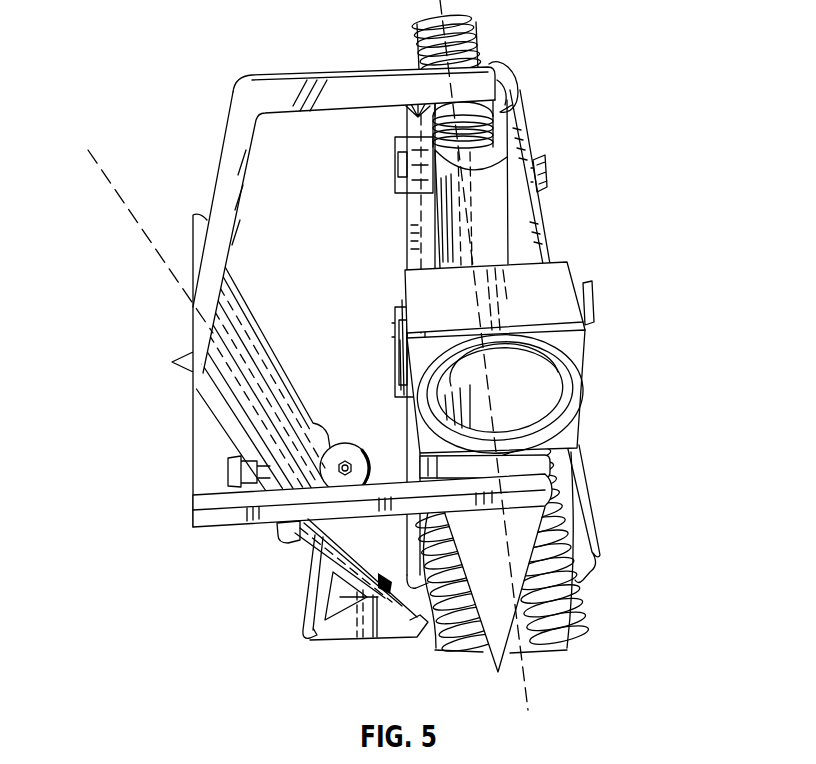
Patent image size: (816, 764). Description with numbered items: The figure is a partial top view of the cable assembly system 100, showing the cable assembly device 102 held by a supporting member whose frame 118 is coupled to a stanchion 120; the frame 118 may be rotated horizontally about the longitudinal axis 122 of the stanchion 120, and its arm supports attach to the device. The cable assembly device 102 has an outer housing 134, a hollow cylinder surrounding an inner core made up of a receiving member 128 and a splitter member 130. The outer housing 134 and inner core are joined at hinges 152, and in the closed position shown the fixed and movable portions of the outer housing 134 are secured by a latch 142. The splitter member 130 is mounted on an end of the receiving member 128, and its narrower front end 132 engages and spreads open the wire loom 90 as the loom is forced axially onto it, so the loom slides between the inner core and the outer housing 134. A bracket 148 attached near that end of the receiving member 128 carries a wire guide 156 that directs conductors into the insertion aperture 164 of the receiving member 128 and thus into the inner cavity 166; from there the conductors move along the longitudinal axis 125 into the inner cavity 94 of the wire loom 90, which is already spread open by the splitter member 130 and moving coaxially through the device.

The cable assembly system 100 is at (116, 28).
The cable assembly device 102 is at (653, 198).
The wire loom 90 is at (474, 40).
The inner cavity 94 is at (510, 92).
The frame 118 is at (267, 72).
The stanchion 120 is at (238, 282).
The longitudinal axis 122 is at (115, 192).
The longitudinal axis 125 is at (523, 678).
The receiving member 128 is at (489, 243).
The splitter member 130 is at (580, 583).
The front end 132 is at (492, 597).
The outer housing 134 is at (595, 522).
The latch 142 is at (548, 165).
The bracket 148 is at (596, 322).
The hinge 152 is at (395, 165).
The wire guide 156 is at (585, 350).
The insertion aperture 164 is at (405, 222).
The inner cavity 166 is at (483, 185).